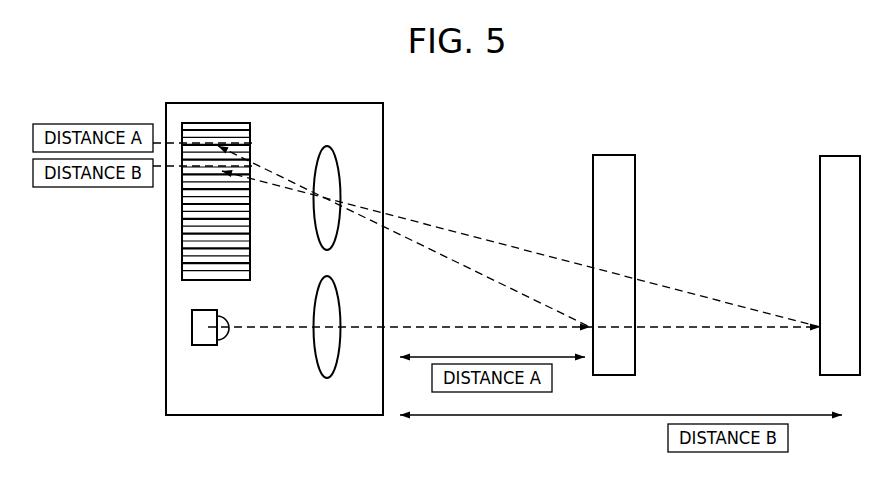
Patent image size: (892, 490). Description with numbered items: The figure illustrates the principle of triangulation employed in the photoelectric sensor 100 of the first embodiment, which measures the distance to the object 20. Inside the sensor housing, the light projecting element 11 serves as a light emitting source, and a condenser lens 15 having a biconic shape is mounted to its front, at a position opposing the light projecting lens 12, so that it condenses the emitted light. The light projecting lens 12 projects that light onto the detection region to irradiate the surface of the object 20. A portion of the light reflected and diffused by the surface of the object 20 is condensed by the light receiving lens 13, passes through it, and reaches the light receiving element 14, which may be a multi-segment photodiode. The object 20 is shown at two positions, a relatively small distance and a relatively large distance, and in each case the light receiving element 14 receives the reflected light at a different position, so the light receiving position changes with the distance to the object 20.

The photoelectric sensor 100 is at (255, 103).
The light projecting element 11 is at (203, 345).
The light projecting lens 12 is at (340, 352).
The light receiving lens 13 is at (327, 147).
The light receiving element 14 is at (250, 123).
The condenser lens 15 is at (230, 316).
The object 20 is at (614, 155).